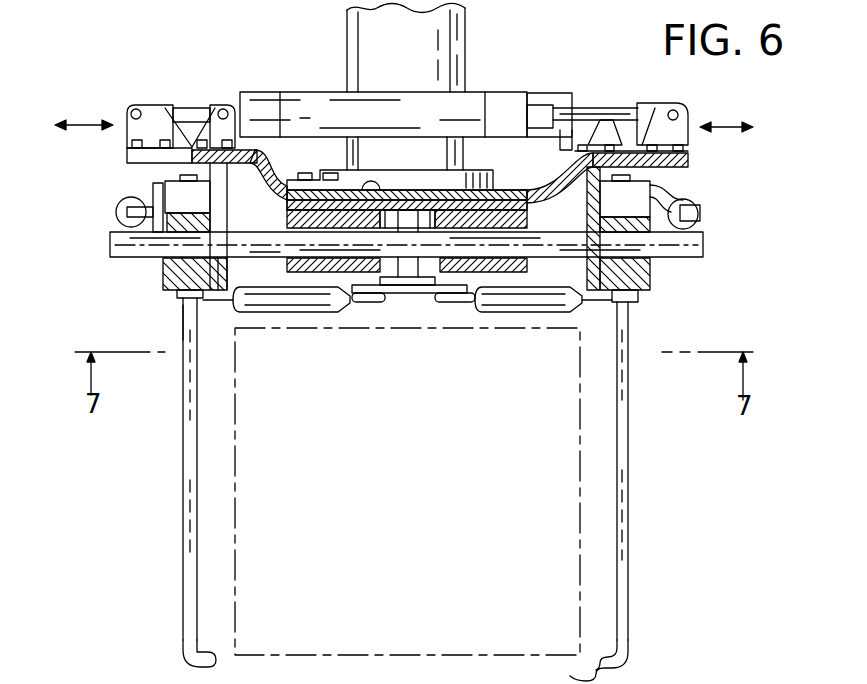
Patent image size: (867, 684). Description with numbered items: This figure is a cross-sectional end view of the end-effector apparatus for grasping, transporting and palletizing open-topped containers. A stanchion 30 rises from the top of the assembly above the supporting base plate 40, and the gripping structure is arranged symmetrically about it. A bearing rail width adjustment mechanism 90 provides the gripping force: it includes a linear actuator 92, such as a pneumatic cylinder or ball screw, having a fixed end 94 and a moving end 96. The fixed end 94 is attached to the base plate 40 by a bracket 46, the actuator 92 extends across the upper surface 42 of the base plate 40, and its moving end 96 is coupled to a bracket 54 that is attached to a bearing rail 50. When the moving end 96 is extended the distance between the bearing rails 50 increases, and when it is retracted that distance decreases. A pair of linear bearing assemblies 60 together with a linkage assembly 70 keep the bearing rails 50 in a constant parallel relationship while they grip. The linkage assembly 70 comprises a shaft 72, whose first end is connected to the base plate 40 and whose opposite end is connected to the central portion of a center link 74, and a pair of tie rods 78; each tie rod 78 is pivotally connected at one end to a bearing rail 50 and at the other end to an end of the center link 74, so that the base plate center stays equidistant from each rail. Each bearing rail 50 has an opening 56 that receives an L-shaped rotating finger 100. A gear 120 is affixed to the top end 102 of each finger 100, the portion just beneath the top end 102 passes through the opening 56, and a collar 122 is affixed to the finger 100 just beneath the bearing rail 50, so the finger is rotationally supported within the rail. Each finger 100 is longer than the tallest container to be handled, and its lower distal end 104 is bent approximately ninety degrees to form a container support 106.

The stanchion 30 is at (347, 58).
The linear actuator 92 is at (300, 91).
The bearing rail width adjustment mechanism 90 is at (512, 82).
The moving end 96 is at (612, 107).
The fixed end 94 is at (222, 104).
The bracket 54 is at (640, 158).
The bracket 46 is at (268, 172).
The supporting base plate 40 is at (527, 204).
The upper surface 42 is at (375, 192).
The shaft 72 is at (505, 223).
The linear bearing assembly 60 is at (108, 238).
The gear 120 is at (699, 219).
The top end 102 is at (180, 173).
The bearing rail 50 is at (165, 276).
The opening 56 is at (178, 298).
The center link 74 is at (403, 302).
The linkage assembly 70 is at (450, 312).
The tie rod 78 is at (315, 313).
The L-shaped rotating finger 100 is at (183, 540).
The collar 122 is at (178, 335).
The lower distal end 104 is at (183, 662).
The container support 106 is at (597, 666).